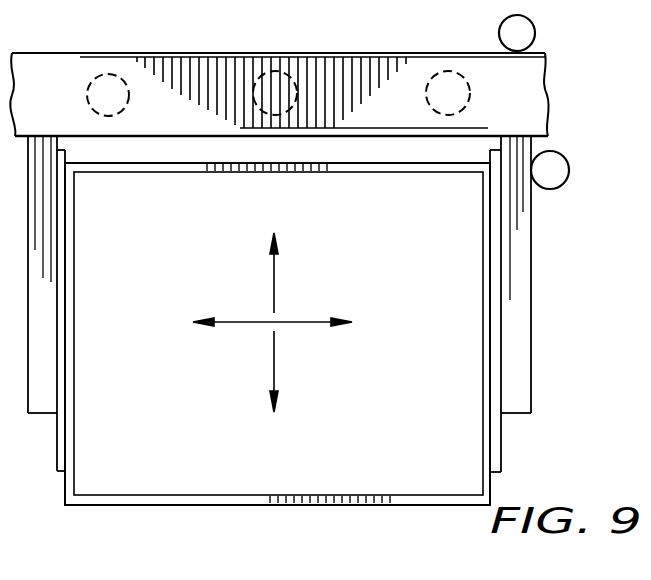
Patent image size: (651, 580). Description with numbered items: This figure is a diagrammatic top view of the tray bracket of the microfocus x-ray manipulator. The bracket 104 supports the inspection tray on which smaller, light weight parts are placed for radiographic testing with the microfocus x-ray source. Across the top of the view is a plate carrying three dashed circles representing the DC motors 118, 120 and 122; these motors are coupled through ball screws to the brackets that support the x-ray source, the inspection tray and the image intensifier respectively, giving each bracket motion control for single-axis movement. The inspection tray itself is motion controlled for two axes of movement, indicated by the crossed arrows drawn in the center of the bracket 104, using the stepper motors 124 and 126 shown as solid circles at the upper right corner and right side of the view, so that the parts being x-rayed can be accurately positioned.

The bracket 104 is at (531, 333).
The DC motor 118 is at (125, 84).
The DC motor 120 is at (287, 83).
The DC motor 122 is at (467, 85).
The stepper motor 124 is at (500, 36).
The stepper motor 126 is at (563, 184).